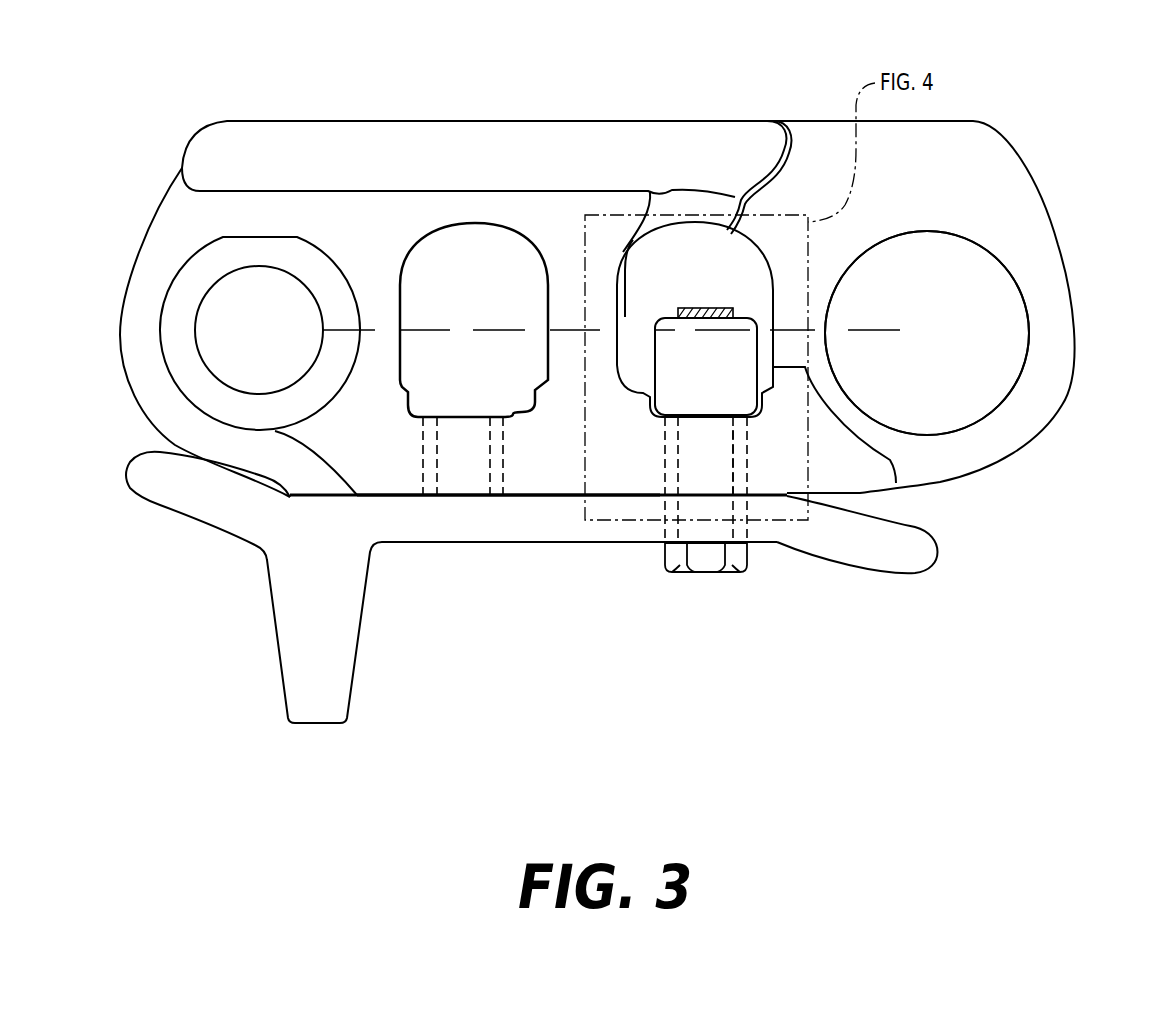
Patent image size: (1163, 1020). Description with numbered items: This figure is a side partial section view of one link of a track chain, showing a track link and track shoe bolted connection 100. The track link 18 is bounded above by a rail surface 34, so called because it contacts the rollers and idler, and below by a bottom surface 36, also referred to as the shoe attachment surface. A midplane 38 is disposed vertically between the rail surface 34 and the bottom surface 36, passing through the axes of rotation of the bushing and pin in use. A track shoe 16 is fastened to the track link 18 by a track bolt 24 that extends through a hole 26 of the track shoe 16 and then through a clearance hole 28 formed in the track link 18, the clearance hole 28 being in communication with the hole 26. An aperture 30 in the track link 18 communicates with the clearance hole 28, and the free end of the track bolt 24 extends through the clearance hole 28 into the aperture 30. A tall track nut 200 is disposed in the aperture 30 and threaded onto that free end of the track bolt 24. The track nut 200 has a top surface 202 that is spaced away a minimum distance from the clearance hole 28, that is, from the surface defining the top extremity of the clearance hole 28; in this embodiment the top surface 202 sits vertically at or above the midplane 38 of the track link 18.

The track link 18 is at (468, 120).
The rail surface 34 is at (650, 120).
The aperture 30 is at (743, 283).
The midplane 38 is at (923, 330).
The top surface 202 is at (745, 318).
The track nut 200 is at (658, 312).
The hole 26 is at (677, 526).
The track bolt 24 is at (707, 585).
The track link and track shoe bolted connection 100 is at (759, 551).
The track shoe 16 is at (382, 553).
The bottom surface 36 is at (463, 497).
The clearance hole 28 is at (747, 452).